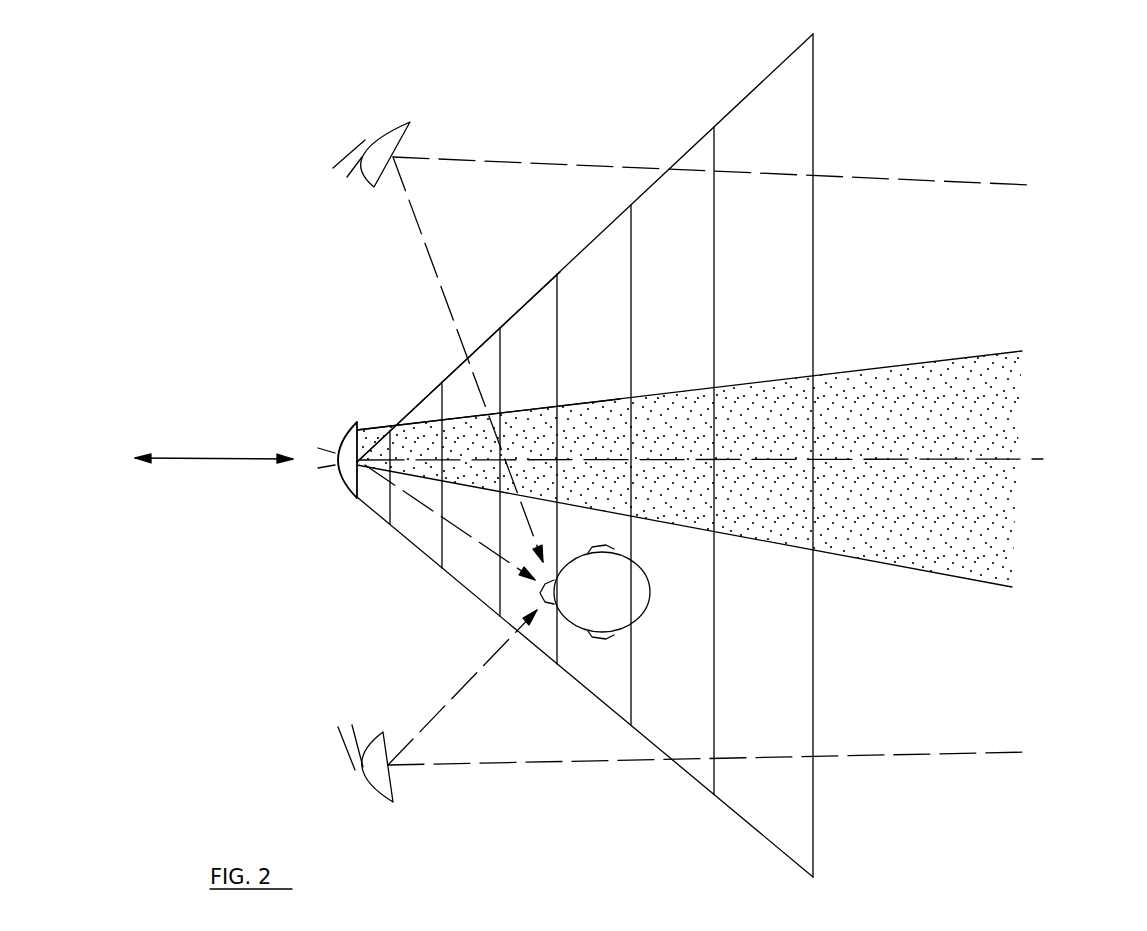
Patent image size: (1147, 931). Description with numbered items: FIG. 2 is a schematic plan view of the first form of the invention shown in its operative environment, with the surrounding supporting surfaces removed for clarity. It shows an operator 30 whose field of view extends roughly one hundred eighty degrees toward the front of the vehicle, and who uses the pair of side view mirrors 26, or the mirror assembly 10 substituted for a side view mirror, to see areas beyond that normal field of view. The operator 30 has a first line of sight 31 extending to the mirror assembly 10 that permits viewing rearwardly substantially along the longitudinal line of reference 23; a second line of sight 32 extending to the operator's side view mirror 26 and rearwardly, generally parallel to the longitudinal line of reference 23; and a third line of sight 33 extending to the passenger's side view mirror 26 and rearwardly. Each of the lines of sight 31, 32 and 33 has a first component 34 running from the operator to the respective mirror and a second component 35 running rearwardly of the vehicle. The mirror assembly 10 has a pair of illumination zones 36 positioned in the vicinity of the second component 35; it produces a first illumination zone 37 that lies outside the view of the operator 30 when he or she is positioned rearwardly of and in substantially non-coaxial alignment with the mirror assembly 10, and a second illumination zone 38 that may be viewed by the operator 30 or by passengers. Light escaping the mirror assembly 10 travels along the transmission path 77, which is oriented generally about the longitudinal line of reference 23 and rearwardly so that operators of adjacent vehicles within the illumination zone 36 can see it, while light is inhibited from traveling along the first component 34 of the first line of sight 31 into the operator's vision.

The mirror assembly 10 is at (348, 438).
The longitudinal line of reference 23 is at (180, 458).
The side view mirrors 26 is at (393, 132).
The operator 30 is at (648, 553).
The first line of sight 31 is at (473, 548).
The second line of sight 32 is at (457, 685).
The third line of sight 33 is at (450, 333).
The first component 34 is at (438, 283).
The second component 35 is at (860, 175).
The illumination zones 36 is at (525, 295).
The first illumination zone 37 is at (1017, 397).
The second illumination zone 38 is at (788, 105).
The transmission path 77 is at (730, 460).